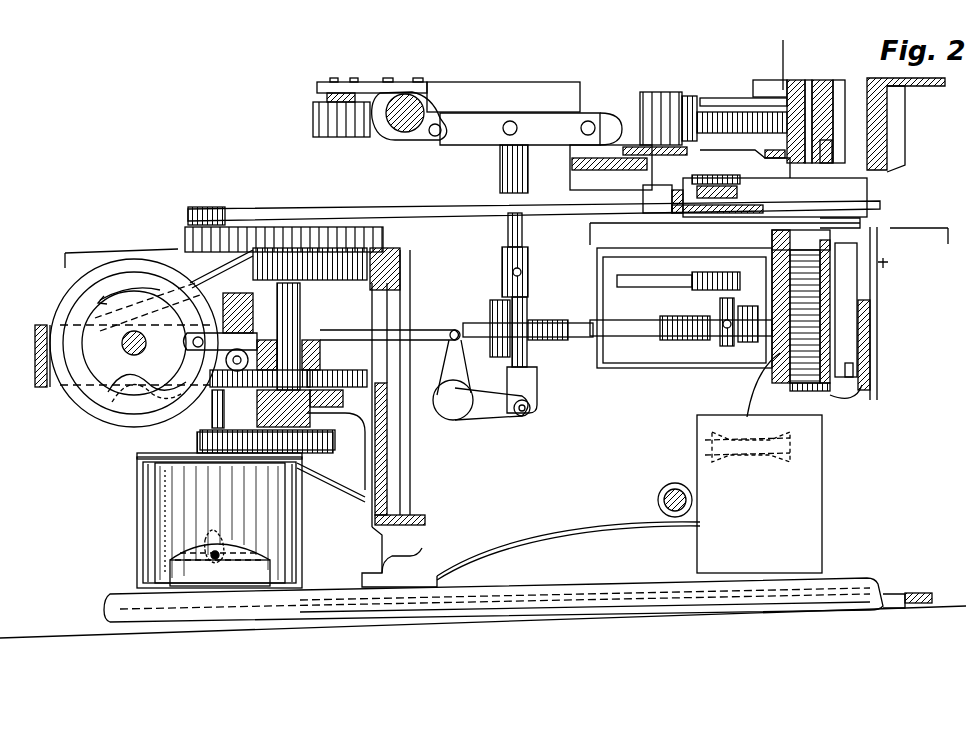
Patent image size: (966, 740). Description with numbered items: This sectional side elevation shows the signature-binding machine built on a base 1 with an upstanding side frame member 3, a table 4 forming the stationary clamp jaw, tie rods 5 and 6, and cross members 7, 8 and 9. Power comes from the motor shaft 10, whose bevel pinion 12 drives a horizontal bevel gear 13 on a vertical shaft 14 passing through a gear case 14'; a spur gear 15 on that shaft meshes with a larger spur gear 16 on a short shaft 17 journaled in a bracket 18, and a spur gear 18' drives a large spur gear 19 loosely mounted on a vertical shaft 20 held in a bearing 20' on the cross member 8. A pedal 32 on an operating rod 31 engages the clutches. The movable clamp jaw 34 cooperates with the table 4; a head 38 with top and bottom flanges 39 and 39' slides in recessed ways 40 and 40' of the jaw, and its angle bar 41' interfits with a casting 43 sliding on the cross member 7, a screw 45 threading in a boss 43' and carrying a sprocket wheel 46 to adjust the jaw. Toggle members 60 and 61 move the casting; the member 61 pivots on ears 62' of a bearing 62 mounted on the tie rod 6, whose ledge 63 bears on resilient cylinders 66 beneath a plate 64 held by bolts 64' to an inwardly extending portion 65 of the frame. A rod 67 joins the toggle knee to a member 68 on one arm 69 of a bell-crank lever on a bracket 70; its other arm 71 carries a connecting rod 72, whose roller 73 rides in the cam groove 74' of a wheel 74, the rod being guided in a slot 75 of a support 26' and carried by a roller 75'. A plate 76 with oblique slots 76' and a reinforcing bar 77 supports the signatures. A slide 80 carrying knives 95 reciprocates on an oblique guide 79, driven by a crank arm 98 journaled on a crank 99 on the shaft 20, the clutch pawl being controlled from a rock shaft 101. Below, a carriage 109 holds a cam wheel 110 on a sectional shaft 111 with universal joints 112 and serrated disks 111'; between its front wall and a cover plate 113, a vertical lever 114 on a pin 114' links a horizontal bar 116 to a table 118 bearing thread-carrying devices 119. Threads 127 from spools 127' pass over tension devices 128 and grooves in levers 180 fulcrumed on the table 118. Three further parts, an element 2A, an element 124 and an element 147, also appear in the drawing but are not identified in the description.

The base 1 is at (490, 615).
The hub 2A is at (128, 348).
The frame member 3 is at (530, 82).
The table 4 is at (912, 88).
The tie rod 5 is at (660, 494).
The tie rod 6 is at (400, 126).
The cross member 7 is at (575, 170).
The cross member 8 is at (390, 490).
The cross member 9 is at (37, 365).
The shaft 10 is at (215, 530).
The bevel pinion 12 is at (303, 527).
The horizontal bevel gear 13 is at (297, 546).
The vertical shaft 14 is at (219, 523).
The gear case 14' is at (185, 522).
The spur gear 15 is at (197, 440).
The spur gear 16 is at (251, 475).
The short shaft 17 is at (258, 428).
The bracket 18 is at (281, 440).
The spur gear 18' is at (260, 399).
The large spur gear 19 is at (368, 376).
The vertical shaft 20 is at (308, 336).
The bearing 20' is at (326, 269).
The support 26' is at (221, 291).
The operating rod 31 is at (624, 613).
The pedal 32 is at (918, 593).
The movable clamp jaw 34 is at (835, 95).
The head 38 is at (848, 108).
The top flange 39 is at (804, 98).
The bottom flange 39' is at (843, 148).
The recessed way 40 is at (777, 130).
The recessed way 40' is at (833, 98).
The angle bar 41' is at (743, 85).
The casting 43 is at (668, 100).
The boss 43' is at (620, 89).
The screw 45 is at (742, 112).
The sprocket wheel 46 is at (781, 57).
The toggle member 60 is at (579, 129).
The toggle member 61 is at (520, 129).
The bearing 62 is at (423, 96).
The ears 62' is at (443, 147).
The ledge 63 is at (330, 138).
The plate 64 is at (335, 63).
The bolts 64' is at (403, 60).
The inwardly extending portion 65 is at (452, 102).
The resilient cylinders 66 is at (313, 116).
The rod 67 is at (523, 240).
The member 68 is at (538, 378).
The arm 69 is at (486, 417).
The bracket 70 is at (446, 418).
The arm 71 is at (454, 368).
The connecting rod 72 is at (428, 330).
The roller 73 is at (135, 334).
The wheel 74 is at (113, 343).
The cam groove 74' is at (129, 289).
The slot 75 is at (212, 325).
The roller 75' is at (201, 361).
The plate 76 is at (775, 197).
The oblique slots 76' is at (853, 162).
The reinforcing bar 77 is at (745, 158).
The oblique guide 79 is at (597, 227).
The slide 80 is at (705, 215).
The knives 95 is at (695, 176).
The crank arm 98 is at (447, 217).
The crank 99 is at (185, 237).
The rock shaft 101 is at (336, 451).
The carriage 109 is at (745, 380).
The cam wheel 110 is at (800, 386).
The shaft 111 is at (528, 318).
The serrated disks 111' is at (490, 316).
The universal joints 112 is at (718, 312).
The cover plate 113 is at (848, 380).
The vertical lever 114 is at (887, 355).
The pin 114' is at (888, 345).
The horizontal bar 116 is at (865, 373).
The table 118 is at (830, 240).
The thread-carrying devices 119 is at (825, 218).
The plate 124 is at (852, 310).
The threads 127 is at (815, 400).
The spools 127' is at (748, 478).
The tension devices 128 is at (890, 264).
The shaft 147 is at (640, 287).
The levers 180 is at (882, 234).